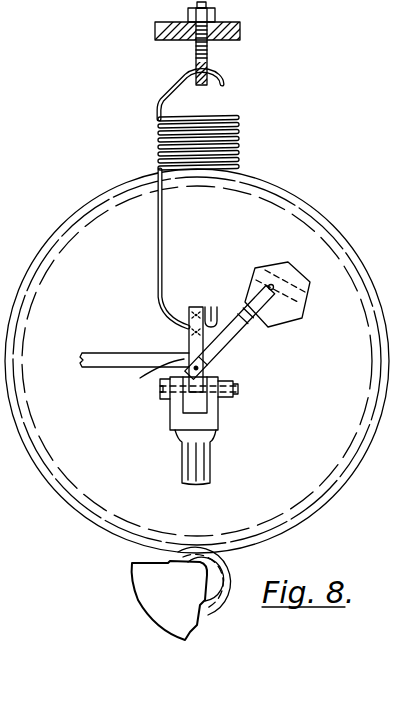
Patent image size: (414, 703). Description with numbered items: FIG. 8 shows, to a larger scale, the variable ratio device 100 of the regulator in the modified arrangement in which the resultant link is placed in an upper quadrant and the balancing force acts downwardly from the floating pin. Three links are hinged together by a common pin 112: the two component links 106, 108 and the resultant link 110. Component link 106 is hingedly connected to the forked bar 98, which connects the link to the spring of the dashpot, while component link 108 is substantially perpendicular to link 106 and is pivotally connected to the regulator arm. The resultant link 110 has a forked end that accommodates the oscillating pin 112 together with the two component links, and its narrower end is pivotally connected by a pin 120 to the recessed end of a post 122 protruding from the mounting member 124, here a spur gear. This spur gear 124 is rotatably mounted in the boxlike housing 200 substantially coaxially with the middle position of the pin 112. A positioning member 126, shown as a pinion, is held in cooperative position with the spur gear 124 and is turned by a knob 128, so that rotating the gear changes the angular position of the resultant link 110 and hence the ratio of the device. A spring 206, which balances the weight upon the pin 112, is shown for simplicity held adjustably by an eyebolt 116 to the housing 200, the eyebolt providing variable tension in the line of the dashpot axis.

The forked bar 98 is at (204, 448).
The variable ratio device 100 is at (122, 167).
The component link 106 is at (189, 348).
The component link 108 is at (104, 351).
The resultant link 110 is at (252, 330).
The common pin 112 is at (178, 363).
The eyebolt 116 is at (215, 52).
The pin 120 is at (268, 283).
The post 122 is at (302, 312).
The mounting member 124 is at (300, 200).
The positioning member 126 is at (228, 583).
The knob 128 is at (157, 630).
The housing 200 is at (247, 33).
The spring 206 is at (242, 137).